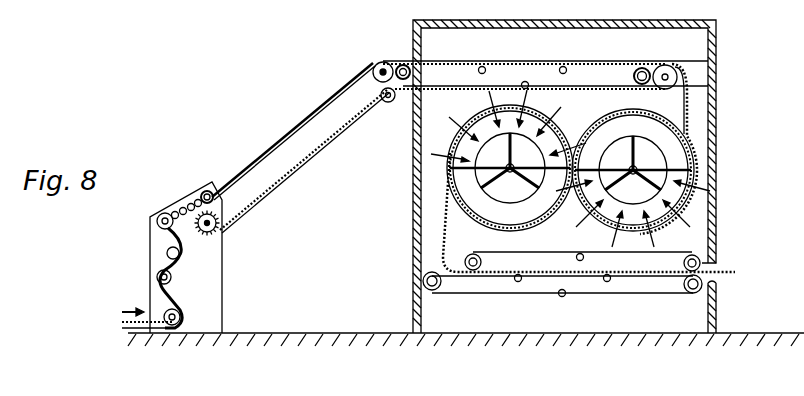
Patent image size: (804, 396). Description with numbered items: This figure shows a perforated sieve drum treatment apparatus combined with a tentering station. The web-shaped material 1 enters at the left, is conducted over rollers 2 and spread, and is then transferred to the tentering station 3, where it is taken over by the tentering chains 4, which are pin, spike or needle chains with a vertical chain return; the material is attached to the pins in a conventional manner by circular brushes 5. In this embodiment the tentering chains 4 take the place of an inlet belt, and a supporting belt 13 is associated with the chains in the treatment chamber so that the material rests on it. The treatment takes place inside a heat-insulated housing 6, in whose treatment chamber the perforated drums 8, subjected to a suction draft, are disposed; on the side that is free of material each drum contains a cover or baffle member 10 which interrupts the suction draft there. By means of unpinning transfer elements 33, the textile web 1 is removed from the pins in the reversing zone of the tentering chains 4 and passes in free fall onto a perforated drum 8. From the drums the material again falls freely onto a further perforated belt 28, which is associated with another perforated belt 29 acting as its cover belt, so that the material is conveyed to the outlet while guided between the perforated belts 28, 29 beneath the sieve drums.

The web-shaped material 1 is at (128, 331).
The rollers 2 is at (158, 274).
The tentering station 3 is at (174, 208).
The tentering chains 4 is at (278, 188).
The circular brushes 5 is at (205, 183).
The heat-insulated housing 6 is at (716, 173).
The perforated drum 8 is at (673, 119).
The cover or baffle member 10 is at (510, 224).
The supporting belt 13 is at (408, 84).
The perforated belt 28 is at (657, 295).
The perforated cover belt 29 is at (662, 252).
The unpinning transfer elements 33 is at (688, 100).